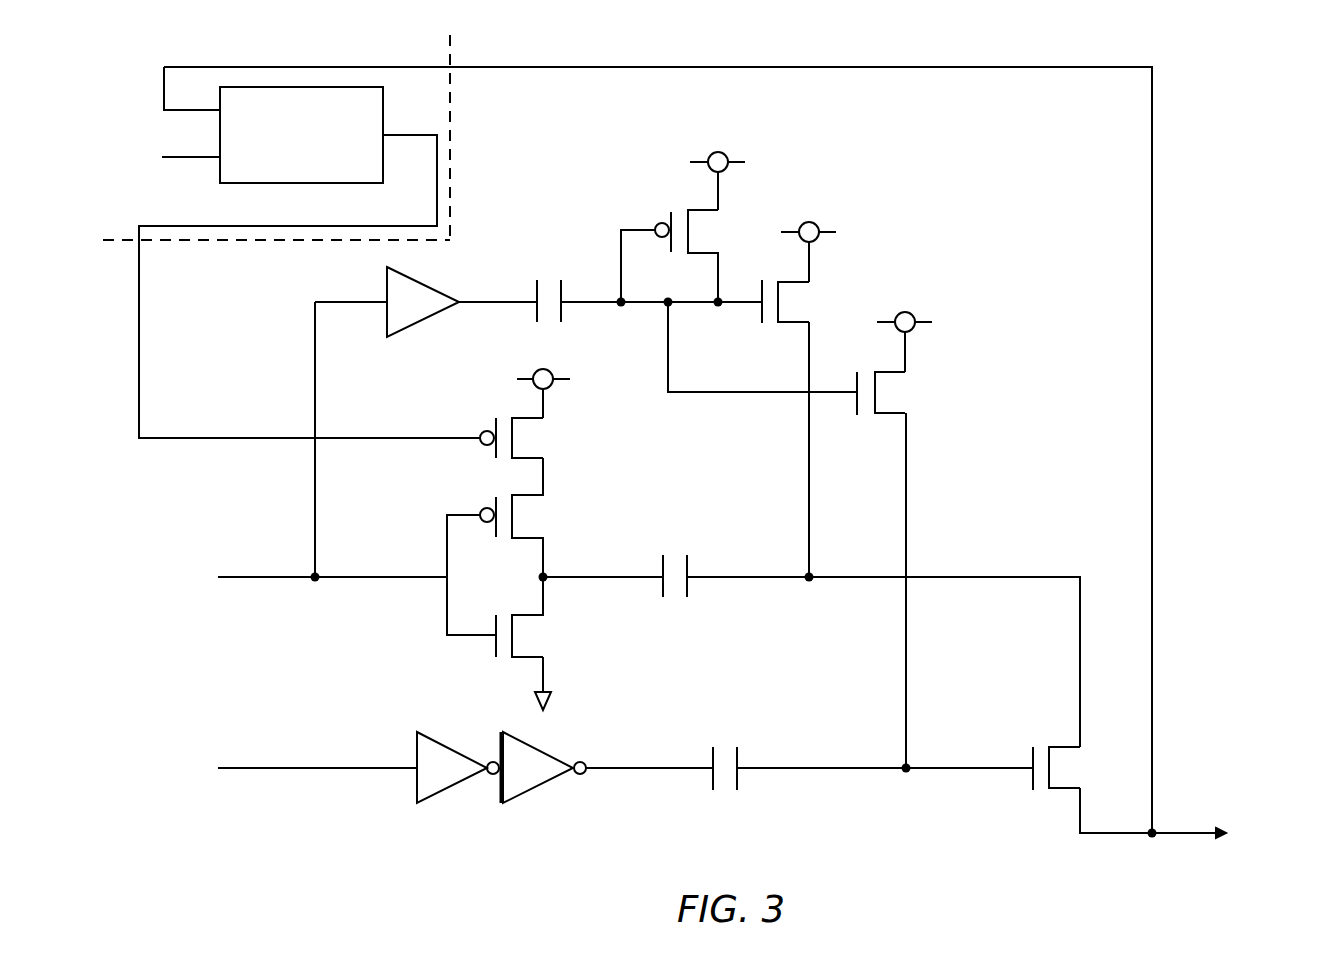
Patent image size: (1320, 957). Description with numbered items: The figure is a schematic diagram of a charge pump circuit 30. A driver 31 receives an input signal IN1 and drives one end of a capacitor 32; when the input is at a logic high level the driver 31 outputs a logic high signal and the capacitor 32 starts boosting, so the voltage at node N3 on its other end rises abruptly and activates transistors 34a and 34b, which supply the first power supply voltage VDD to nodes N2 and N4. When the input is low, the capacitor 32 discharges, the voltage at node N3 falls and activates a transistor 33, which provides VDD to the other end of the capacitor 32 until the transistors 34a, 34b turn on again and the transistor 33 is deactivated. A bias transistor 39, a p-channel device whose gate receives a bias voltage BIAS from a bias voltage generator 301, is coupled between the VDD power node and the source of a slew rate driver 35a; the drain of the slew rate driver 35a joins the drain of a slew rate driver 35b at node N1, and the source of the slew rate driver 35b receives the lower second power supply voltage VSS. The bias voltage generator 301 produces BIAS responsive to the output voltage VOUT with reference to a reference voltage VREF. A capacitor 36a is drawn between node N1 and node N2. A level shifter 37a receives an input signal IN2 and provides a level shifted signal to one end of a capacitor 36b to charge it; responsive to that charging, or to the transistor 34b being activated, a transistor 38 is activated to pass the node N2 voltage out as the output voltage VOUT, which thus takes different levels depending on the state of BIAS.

The charge pump circuit 30 is at (1152, 38).
The bias voltage generator 301 is at (245, 184).
The driver 31 is at (387, 282).
The capacitor 32 is at (548, 278).
The transistor 33 is at (680, 210).
The transistor 34a is at (770, 280).
The transistor 34b is at (866, 375).
The slew rate driver 35a is at (505, 495).
The slew rate driver 35b is at (505, 657).
The capacitor 36a is at (680, 553).
The capacitor 36b is at (727, 745).
The level shifter 37a is at (412, 786).
The transistor 38 is at (1040, 747).
The bias transistor 39 is at (505, 418).